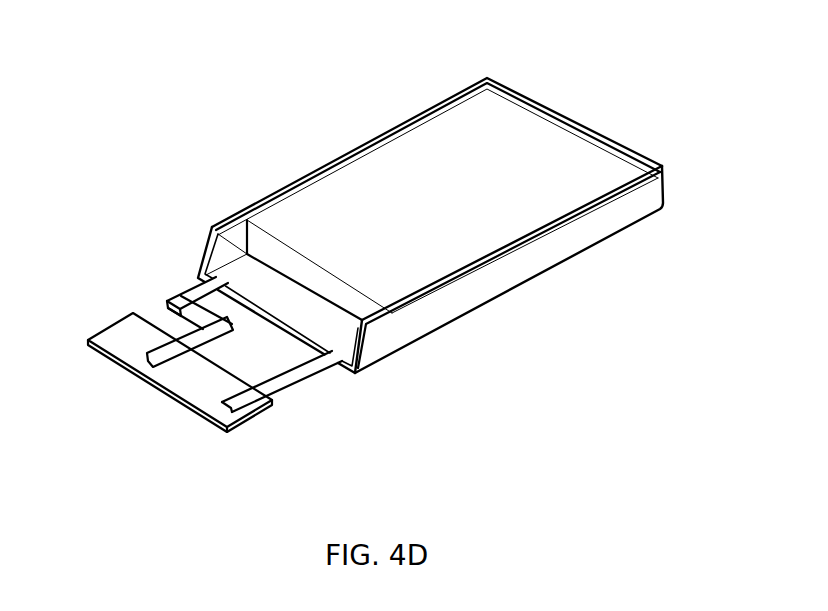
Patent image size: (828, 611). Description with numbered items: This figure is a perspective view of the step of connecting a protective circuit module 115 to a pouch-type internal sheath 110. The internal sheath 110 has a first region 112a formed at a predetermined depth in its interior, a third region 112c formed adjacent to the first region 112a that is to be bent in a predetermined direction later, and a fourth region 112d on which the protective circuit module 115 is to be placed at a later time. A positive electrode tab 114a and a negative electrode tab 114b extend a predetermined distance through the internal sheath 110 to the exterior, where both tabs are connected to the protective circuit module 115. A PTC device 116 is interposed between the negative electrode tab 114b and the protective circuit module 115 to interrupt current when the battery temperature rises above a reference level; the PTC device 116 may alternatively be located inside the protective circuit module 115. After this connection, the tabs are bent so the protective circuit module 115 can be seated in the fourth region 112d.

The internal sheath 110 is at (426, 207).
The first region 112a is at (531, 114).
The third region 112c is at (577, 245).
The fourth region 112d is at (272, 288).
The positive electrode tab 114a is at (290, 373).
The negative electrode tab 114b is at (200, 292).
The protective circuit module 115 is at (190, 388).
The PTC device 116 is at (180, 304).